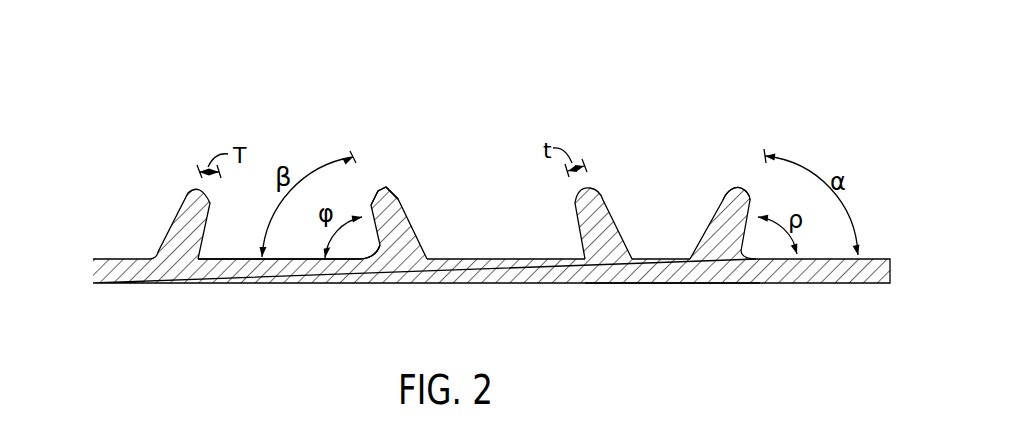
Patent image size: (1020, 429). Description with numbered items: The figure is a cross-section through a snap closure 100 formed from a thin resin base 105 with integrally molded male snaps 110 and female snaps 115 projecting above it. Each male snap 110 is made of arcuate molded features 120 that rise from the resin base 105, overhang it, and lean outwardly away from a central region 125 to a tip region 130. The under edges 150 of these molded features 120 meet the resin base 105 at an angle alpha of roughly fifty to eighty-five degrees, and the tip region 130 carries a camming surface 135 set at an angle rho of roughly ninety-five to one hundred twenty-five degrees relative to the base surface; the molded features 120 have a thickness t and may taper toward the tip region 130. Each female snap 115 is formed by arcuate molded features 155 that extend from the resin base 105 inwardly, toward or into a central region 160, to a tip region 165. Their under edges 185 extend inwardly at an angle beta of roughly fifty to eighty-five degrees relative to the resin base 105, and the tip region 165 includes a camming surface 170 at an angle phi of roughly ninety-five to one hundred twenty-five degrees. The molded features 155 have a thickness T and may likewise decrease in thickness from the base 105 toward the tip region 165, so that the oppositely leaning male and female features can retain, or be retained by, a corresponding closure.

The snap closure 100 is at (203, 35).
The resin base 105 is at (95, 265).
The male snap 110 is at (574, 243).
The female snap 115 is at (145, 213).
The molded feature 120 is at (722, 206).
The central region 125 is at (658, 262).
The tip region 130 is at (736, 194).
The camming surface 135 is at (745, 181).
The under edge 150 is at (741, 255).
The molded feature 155 is at (408, 222).
The central region 160 is at (237, 260).
The tip region 165 is at (384, 196).
The camming surface 170 is at (373, 182).
The under edge 185 is at (361, 258).